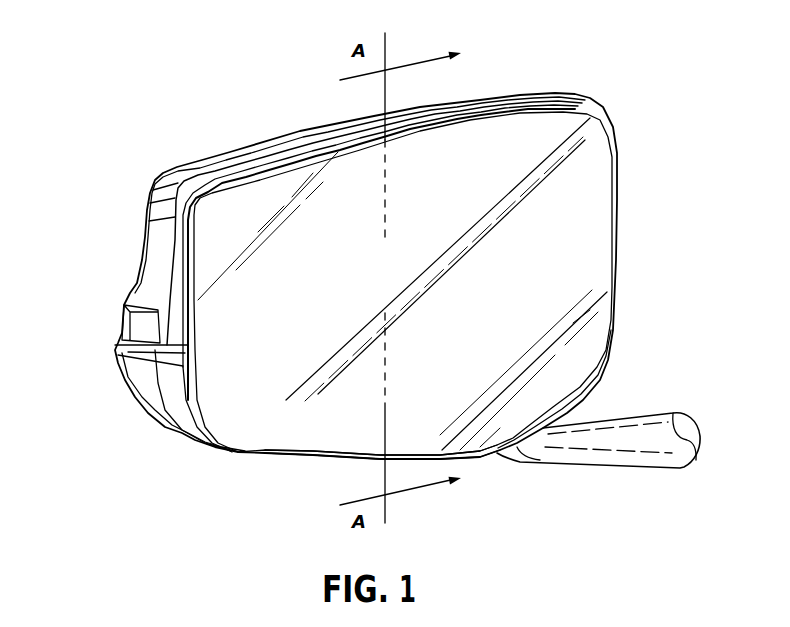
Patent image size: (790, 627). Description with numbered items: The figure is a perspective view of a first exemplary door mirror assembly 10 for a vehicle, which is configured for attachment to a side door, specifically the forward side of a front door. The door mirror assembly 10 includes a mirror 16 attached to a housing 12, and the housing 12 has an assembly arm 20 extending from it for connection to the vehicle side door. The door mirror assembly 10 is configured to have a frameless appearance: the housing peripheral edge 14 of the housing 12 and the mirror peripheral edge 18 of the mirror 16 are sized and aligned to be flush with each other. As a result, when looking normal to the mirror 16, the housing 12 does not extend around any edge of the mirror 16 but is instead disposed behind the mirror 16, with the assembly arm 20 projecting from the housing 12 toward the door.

The door mirror assembly 10 is at (130, 152).
The housing 12 is at (248, 160).
The housing peripheral edge 14 is at (303, 143).
The mirror 16 is at (570, 118).
The mirror peripheral edge 18 is at (257, 455).
The assembly arm 20 is at (623, 458).